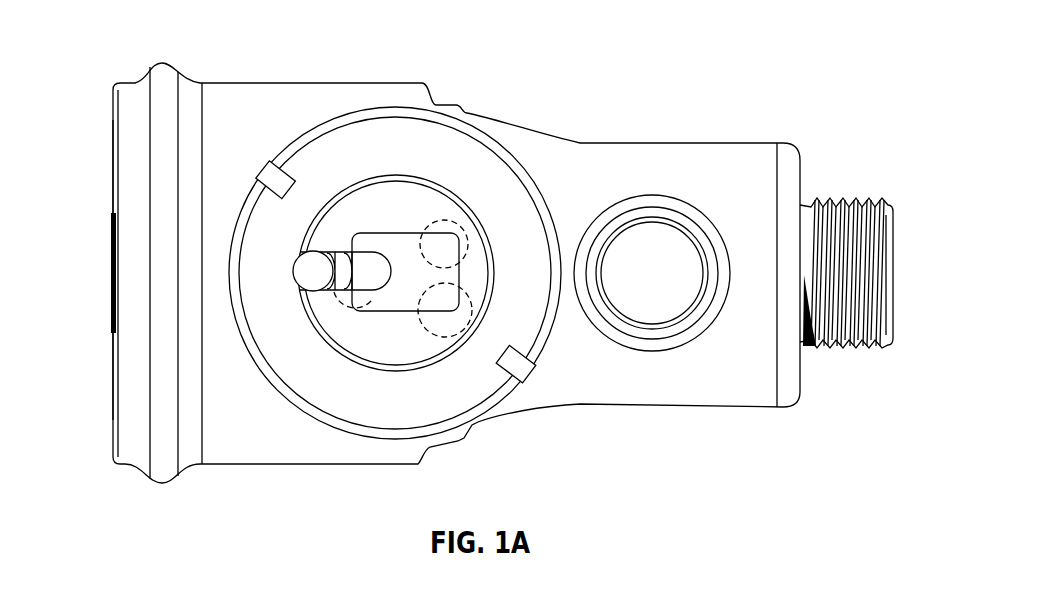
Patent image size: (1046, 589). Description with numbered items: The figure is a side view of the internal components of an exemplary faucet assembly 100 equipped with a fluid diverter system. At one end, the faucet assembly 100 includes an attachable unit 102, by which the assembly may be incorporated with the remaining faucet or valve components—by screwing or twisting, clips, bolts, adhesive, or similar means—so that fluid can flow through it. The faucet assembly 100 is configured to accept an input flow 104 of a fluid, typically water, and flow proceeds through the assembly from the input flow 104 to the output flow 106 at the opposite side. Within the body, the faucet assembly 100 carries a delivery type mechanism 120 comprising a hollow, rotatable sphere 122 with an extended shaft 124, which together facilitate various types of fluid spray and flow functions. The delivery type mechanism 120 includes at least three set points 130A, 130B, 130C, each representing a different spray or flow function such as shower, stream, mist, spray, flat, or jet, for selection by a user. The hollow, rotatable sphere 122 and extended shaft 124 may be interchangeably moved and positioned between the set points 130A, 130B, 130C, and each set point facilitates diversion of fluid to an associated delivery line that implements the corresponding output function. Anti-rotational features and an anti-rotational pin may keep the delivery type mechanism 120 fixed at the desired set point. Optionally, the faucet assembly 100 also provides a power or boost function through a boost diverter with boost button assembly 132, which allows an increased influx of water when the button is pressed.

The faucet assembly 100 is at (852, 40).
The attachable unit 102 is at (855, 200).
The input flow 104 is at (908, 278).
The output flow 106 is at (102, 272).
The delivery type mechanism 120 is at (353, 340).
The hollow, rotatable sphere 122 is at (402, 258).
The extended shaft 124 is at (307, 242).
The set point 130A is at (348, 245).
The set point 130B is at (443, 340).
The set point 130C is at (445, 220).
The boost diverter with boost button assembly 132 is at (660, 248).